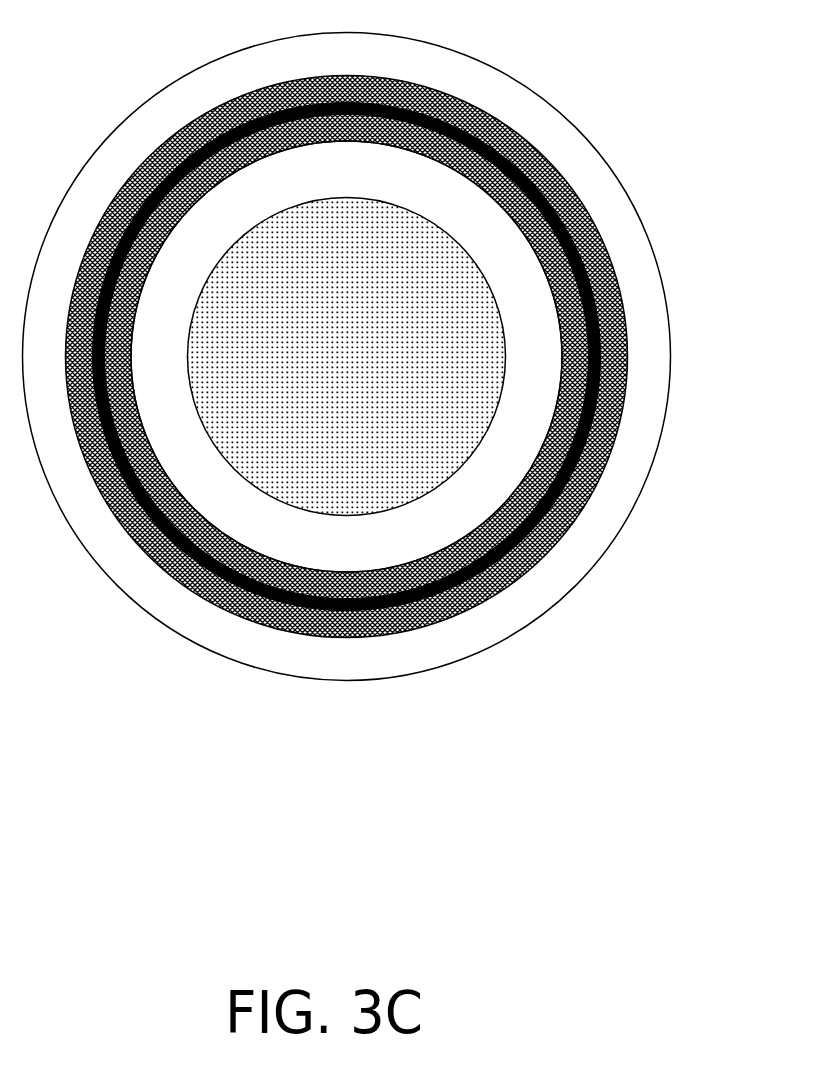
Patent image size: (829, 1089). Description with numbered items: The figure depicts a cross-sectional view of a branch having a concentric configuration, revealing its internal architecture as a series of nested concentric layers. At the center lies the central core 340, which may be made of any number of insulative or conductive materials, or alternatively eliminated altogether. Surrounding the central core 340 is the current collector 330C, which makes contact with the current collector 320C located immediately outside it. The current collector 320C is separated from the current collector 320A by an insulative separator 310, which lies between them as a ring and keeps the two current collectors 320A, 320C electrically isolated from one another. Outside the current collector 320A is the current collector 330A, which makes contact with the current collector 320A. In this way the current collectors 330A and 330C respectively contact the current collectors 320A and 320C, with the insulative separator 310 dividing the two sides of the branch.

The current collector 330A is at (517, 105).
The current collector 320A is at (563, 177).
The insulative separator 310 is at (598, 237).
The current collector 320C is at (590, 292).
The current collector 330C is at (532, 385).
The central core 340 is at (435, 402).